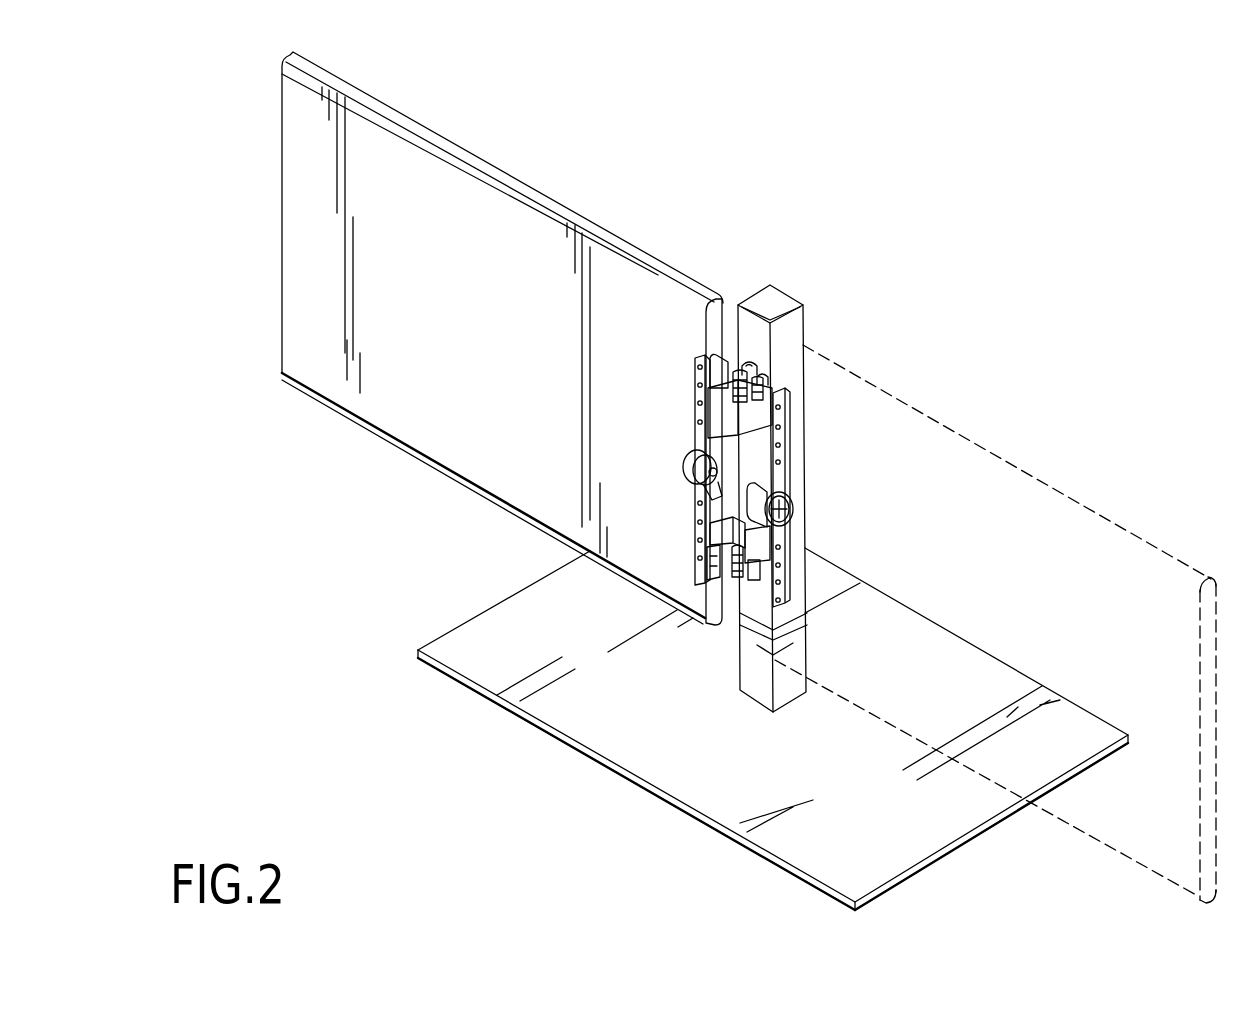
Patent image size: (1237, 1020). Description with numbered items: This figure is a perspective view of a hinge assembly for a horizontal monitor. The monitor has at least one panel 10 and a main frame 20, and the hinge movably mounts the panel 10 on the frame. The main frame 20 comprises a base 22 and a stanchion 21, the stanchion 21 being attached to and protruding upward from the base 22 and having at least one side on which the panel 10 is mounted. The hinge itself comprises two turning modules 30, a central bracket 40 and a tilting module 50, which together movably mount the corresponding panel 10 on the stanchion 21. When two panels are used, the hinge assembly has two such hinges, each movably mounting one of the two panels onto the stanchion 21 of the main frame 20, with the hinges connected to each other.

The panel 10 is at (1005, 477).
The main frame 20 is at (470, 599).
The stanchion 21 is at (775, 292).
The base 22 is at (927, 835).
The turning module 30 is at (803, 340).
The central bracket 40 is at (705, 552).
The tilting module 50 is at (790, 497).